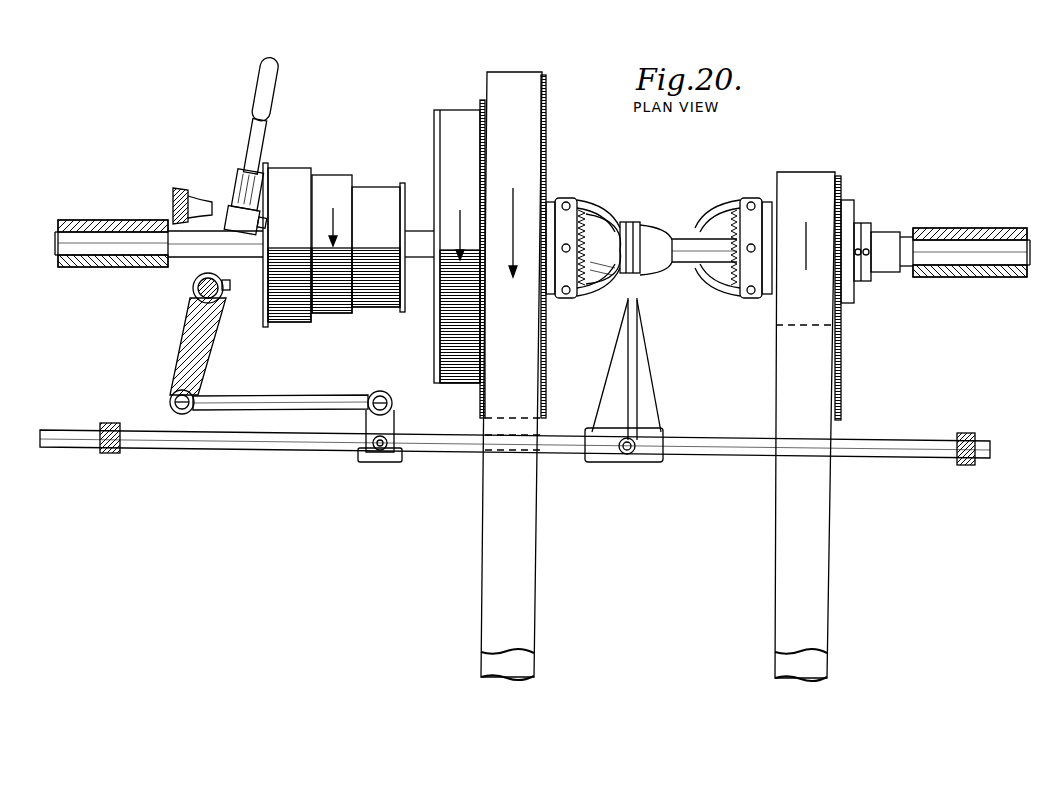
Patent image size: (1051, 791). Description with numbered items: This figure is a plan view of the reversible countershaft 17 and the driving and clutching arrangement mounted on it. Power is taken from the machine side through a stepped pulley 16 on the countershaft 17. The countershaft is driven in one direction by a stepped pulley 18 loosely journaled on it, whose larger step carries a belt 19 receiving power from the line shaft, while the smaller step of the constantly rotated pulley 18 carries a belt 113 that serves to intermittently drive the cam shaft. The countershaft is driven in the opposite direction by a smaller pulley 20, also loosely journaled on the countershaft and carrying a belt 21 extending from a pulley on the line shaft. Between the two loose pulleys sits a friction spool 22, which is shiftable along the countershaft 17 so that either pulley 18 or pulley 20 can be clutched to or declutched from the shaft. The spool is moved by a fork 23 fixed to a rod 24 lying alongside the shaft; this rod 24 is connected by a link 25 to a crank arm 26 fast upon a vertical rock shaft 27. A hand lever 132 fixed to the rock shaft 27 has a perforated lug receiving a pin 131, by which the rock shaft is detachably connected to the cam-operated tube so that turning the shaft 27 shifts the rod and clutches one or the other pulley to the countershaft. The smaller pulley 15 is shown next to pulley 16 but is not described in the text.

The pulley 15 is at (331, 187).
The stepped pulley 16 is at (289, 177).
The reversible countershaft 17 is at (67, 240).
The stepped pulley 18 is at (547, 102).
The belt 19 is at (518, 82).
The smaller pulley 20 is at (842, 182).
The belt 21 is at (808, 176).
The friction spool 22 is at (651, 234).
The fork 23 is at (633, 338).
The rod 24 is at (68, 446).
The link 25 is at (297, 393).
The crank arm 26 is at (212, 347).
The vertical rock shaft 27 is at (192, 286).
The belt 113 is at (451, 108).
The pin 131 is at (180, 204).
The hand lever 132 is at (266, 102).